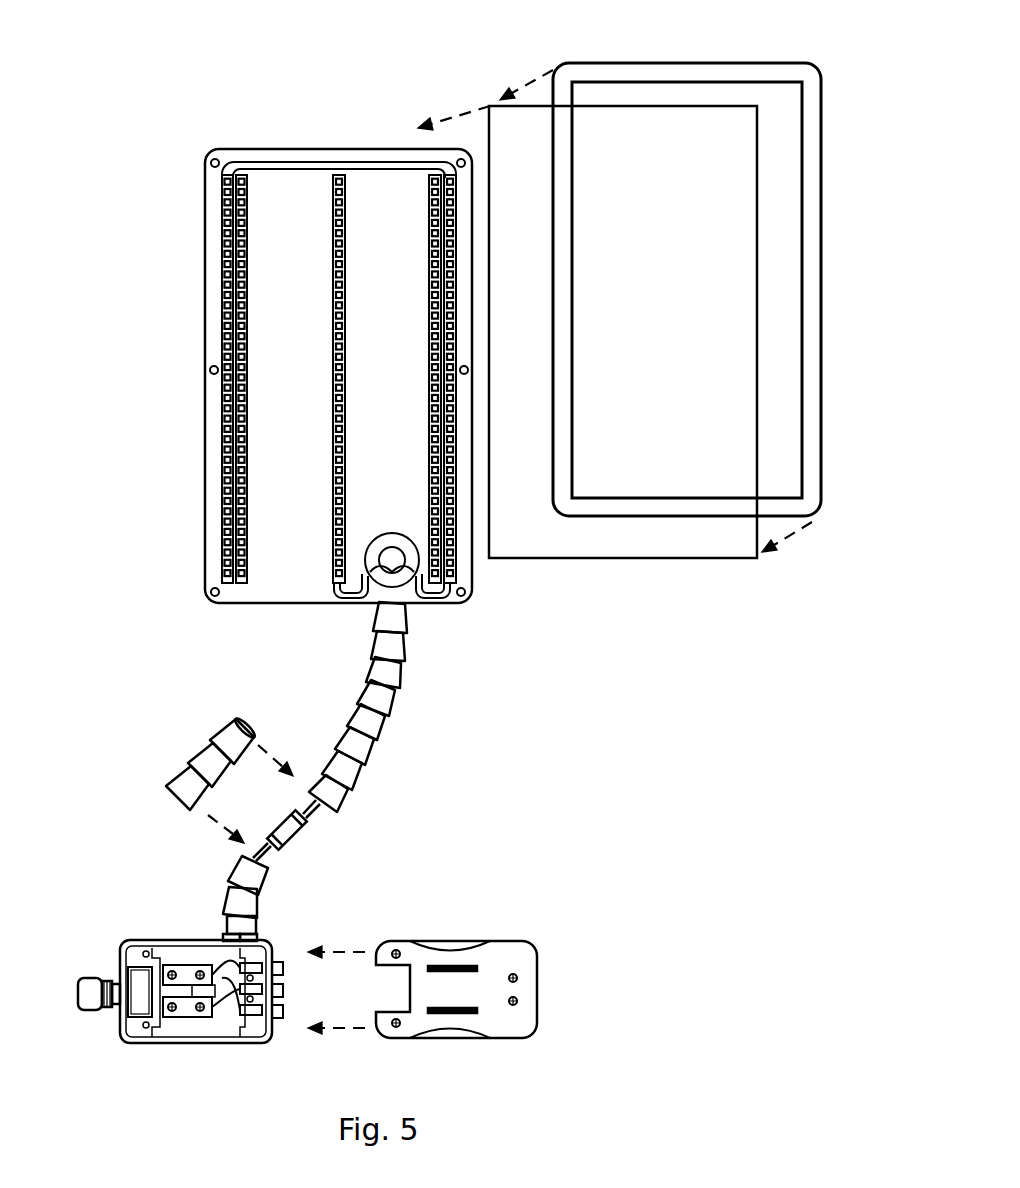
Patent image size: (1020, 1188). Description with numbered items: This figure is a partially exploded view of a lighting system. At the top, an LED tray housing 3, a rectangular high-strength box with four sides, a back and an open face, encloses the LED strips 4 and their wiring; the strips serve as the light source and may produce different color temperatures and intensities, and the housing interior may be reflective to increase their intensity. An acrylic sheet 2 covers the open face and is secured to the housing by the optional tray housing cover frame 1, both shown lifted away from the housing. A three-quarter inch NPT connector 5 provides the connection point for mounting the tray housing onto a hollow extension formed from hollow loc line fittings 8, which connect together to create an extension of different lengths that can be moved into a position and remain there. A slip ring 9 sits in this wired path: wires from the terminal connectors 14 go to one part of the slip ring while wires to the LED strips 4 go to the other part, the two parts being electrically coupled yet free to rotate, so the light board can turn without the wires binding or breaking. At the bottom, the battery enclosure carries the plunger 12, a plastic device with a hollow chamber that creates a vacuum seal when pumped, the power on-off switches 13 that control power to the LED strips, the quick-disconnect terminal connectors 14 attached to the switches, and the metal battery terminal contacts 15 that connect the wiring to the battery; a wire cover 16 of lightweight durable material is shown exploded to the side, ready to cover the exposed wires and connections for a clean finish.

The tray housing cover frame 1 is at (612, 64).
The acrylic sheet 2 is at (532, 560).
The LED tray housing 3 is at (205, 165).
The LED strips 4 is at (222, 200).
The ¾" NPT connector 5 is at (260, 935).
The loc line fittings 8 is at (404, 735).
The slip ring 9 is at (305, 842).
The plunger 12 is at (92, 978).
The power on-off switches 13 is at (283, 1020).
The terminal connectors 14 is at (252, 1022).
The battery terminal contacts 15 is at (188, 962).
The wire cover 16 is at (527, 943).